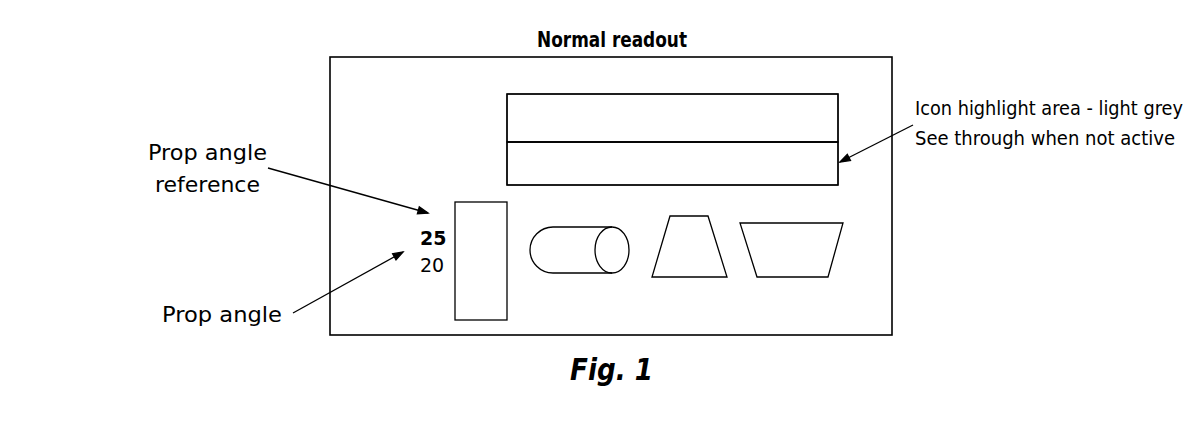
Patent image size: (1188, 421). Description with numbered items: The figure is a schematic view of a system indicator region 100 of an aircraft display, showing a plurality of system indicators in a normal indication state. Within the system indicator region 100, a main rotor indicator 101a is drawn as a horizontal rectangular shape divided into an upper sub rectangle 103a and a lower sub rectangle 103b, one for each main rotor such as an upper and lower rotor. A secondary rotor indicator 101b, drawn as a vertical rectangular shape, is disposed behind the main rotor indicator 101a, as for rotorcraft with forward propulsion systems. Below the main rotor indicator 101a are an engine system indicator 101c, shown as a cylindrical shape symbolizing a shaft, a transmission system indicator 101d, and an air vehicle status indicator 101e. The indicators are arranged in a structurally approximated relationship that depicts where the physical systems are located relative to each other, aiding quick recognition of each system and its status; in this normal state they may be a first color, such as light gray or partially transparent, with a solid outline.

The system indicator region 100 is at (393, 111).
The main rotor indicator 101a is at (507, 120).
The secondary rotor indicator 101b is at (474, 201).
The engine system indicator 101c is at (570, 275).
The transmission system indicator 101d is at (693, 279).
The air vehicle status indicator 101e is at (797, 279).
The sub rectangle 103a is at (788, 101).
The sub rectangle 103b is at (815, 178).